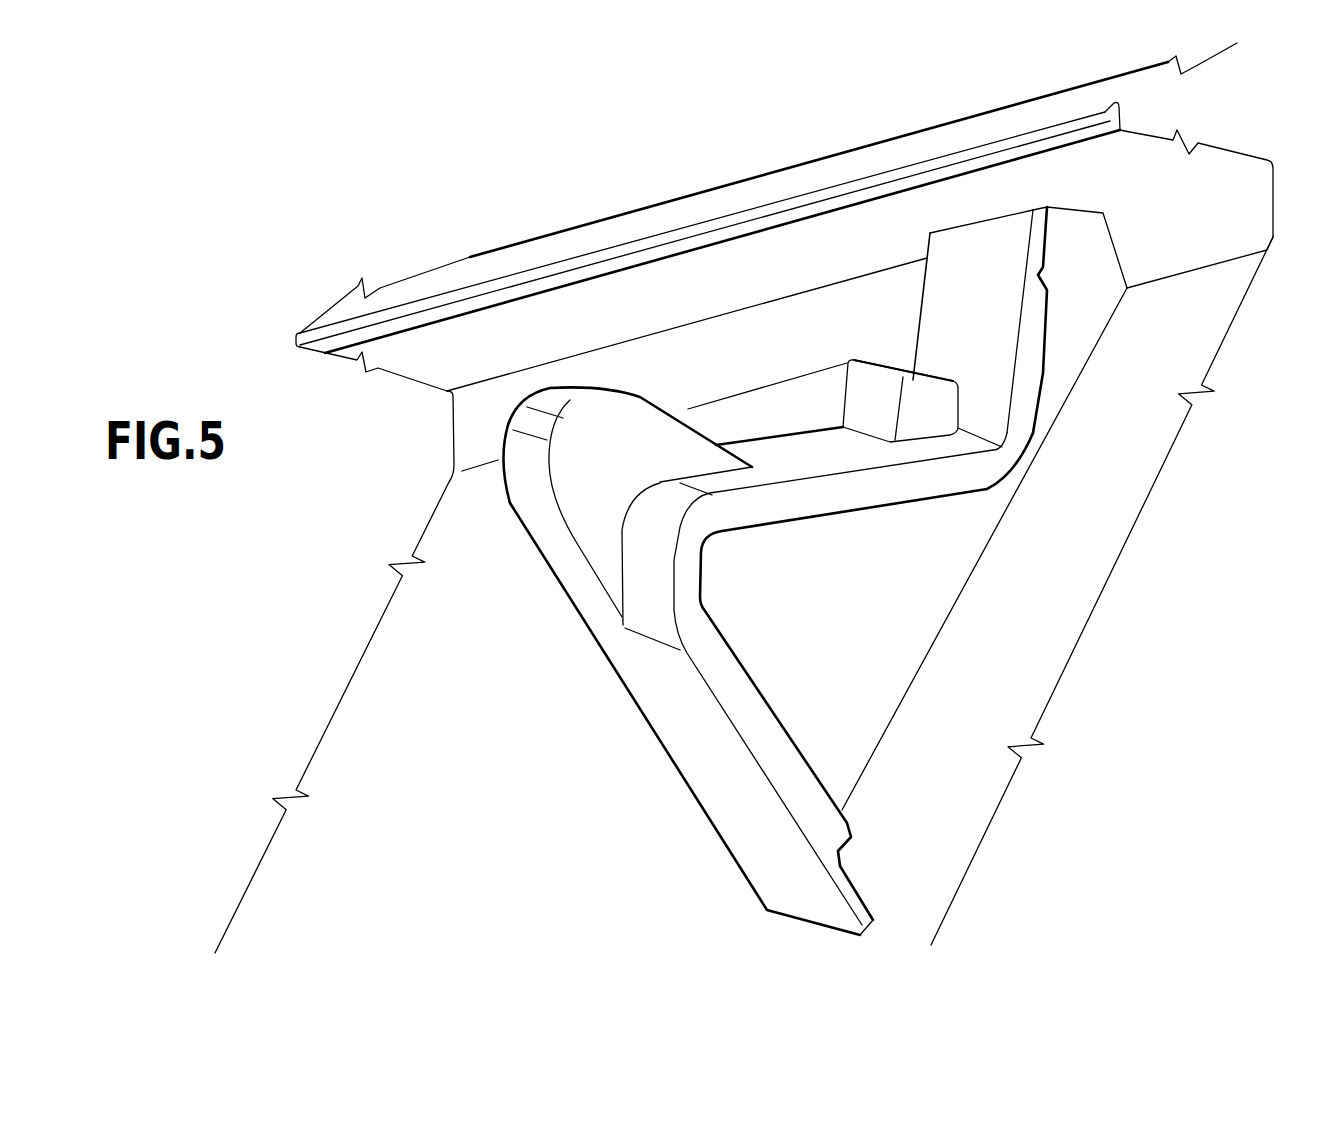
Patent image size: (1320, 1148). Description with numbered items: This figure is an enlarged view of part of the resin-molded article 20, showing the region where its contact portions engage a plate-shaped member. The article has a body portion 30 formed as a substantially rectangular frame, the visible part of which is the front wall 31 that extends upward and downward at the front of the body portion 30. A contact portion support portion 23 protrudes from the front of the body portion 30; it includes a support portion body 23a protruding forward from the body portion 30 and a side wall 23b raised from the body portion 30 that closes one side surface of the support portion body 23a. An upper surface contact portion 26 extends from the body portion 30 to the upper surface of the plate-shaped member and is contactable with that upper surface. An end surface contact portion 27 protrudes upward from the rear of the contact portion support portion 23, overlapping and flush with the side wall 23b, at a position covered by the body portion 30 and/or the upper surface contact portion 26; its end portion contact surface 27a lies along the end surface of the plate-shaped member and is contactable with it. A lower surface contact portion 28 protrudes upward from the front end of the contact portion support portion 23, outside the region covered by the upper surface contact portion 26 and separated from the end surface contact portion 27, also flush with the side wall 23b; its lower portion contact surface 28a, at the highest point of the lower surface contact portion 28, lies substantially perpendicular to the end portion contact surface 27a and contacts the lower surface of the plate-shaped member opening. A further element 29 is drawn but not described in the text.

The resin-molded article 20 is at (240, 156).
The contact portion support portion 23 is at (537, 558).
The support portion body 23a is at (537, 558).
The side wall 23b is at (878, 623).
The upper surface contact portion 26 is at (625, 230).
The end surface contact portion 27 is at (958, 510).
The end portion contact surface 27a is at (876, 394).
The lower surface contact portion 28 is at (627, 447).
The lower portion contact surface 28a is at (555, 401).
The rib 29 is at (1030, 332).
The body portion 30 is at (334, 672).
The front wall 31 is at (410, 706).